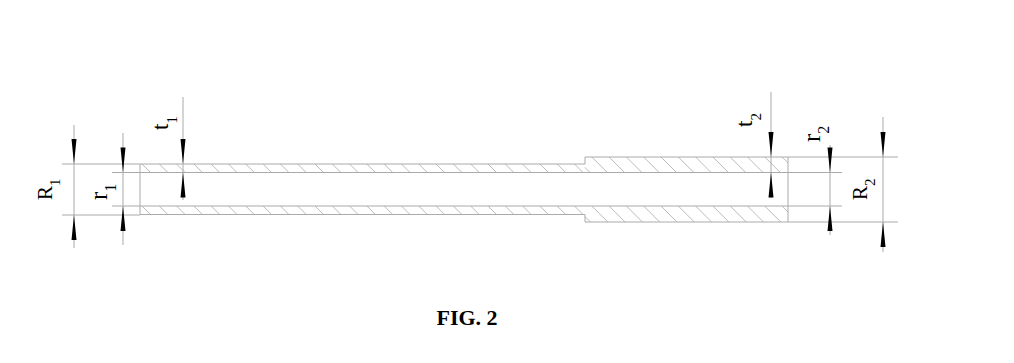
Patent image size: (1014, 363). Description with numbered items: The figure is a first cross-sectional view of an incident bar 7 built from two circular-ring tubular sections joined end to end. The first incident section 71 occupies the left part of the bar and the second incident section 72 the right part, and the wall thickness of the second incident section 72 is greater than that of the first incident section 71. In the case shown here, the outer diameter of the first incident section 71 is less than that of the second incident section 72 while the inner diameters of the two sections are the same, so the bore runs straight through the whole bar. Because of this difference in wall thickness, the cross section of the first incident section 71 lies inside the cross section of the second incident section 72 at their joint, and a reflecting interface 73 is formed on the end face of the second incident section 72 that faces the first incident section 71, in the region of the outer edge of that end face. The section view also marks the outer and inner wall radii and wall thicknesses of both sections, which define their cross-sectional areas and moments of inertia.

The incident bar 7 is at (447, 34).
The first incident section 71 is at (247, 168).
The second incident section 72 is at (651, 160).
The reflecting interface 73 is at (557, 160).